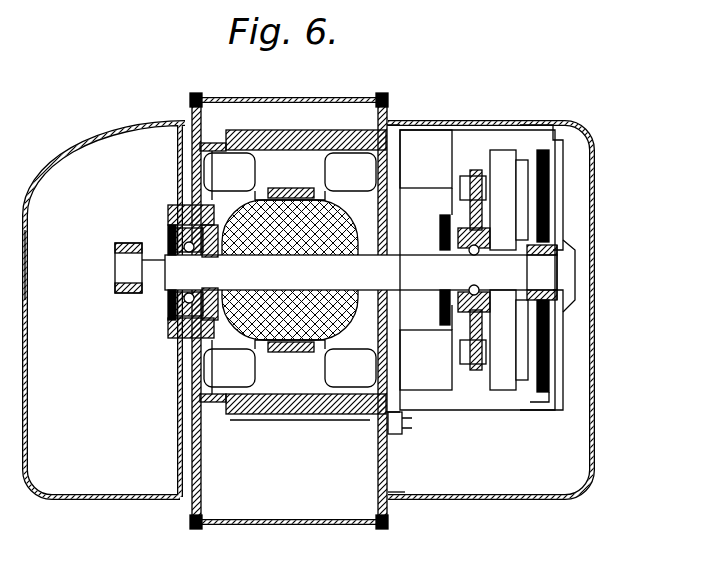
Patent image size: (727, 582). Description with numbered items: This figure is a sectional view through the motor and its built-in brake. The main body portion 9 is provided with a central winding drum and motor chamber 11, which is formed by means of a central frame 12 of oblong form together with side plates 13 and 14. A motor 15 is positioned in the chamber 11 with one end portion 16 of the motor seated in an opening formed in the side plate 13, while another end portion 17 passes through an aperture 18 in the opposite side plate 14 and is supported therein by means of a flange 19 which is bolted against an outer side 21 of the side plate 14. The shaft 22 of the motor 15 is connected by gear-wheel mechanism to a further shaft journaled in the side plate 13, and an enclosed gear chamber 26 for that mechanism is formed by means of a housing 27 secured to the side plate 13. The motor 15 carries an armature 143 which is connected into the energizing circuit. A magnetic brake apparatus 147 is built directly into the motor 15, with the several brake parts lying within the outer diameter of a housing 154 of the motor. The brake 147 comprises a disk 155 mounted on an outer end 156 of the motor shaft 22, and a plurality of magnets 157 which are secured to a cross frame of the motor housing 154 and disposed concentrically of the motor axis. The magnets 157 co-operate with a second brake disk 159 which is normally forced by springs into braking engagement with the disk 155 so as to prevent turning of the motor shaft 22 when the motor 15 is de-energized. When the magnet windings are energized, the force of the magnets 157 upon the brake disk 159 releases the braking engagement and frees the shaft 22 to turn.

The main body portion 9 is at (290, 332).
The central winding drum and motor chamber 11 is at (300, 456).
The central frame 12 is at (290, 97).
The side plate 13 is at (182, 432).
The side plate 14 is at (384, 460).
The motor 15 is at (298, 414).
The end portion 16 is at (176, 335).
The end portion 17 is at (402, 422).
The aperture 18 is at (360, 412).
The flange 19 is at (404, 448).
The outer side 21 is at (388, 492).
The shaft 22 is at (156, 268).
The gear chamber 26 is at (308, 310).
The housing 27 is at (30, 262).
The armature 143 is at (265, 222).
The magnetic brake apparatus 147 is at (484, 168).
The housing 154 is at (524, 420).
The disk 155 is at (549, 243).
The outer end 156 is at (548, 272).
The magnets 157 is at (490, 420).
The second brake disk 159 is at (549, 385).